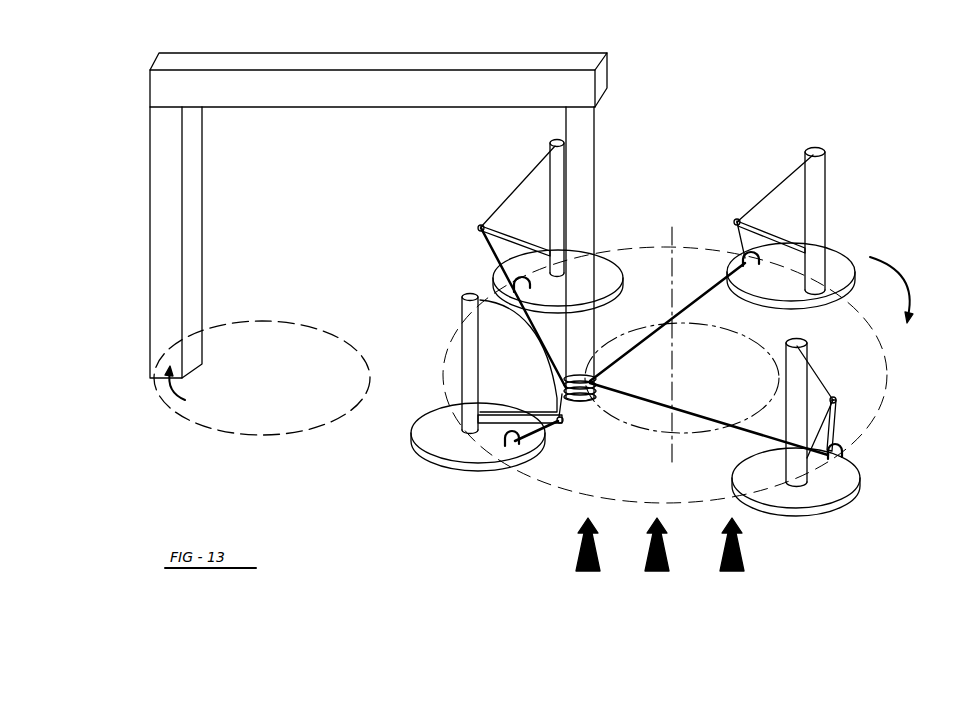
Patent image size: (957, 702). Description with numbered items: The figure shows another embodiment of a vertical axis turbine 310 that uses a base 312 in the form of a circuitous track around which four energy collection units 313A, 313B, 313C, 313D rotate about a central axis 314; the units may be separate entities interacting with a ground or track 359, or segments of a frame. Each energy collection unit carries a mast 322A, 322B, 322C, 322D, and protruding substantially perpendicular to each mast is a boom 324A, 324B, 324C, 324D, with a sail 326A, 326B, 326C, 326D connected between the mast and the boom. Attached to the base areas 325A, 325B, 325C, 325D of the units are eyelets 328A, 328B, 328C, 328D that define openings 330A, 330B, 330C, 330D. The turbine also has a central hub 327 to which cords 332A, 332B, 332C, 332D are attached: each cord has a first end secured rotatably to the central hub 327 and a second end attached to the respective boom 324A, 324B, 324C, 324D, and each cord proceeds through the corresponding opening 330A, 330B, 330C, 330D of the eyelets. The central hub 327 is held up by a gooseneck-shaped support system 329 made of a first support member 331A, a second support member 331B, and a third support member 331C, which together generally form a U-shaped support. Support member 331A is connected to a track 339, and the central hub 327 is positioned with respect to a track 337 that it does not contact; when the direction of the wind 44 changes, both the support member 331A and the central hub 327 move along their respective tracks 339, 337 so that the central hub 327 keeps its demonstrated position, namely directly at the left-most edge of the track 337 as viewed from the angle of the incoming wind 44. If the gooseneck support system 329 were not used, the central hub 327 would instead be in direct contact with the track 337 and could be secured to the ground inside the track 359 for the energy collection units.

The vertical axis turbine 310 is at (828, 62).
The support system 329 is at (529, 52).
The first support member 331A is at (165, 183).
The second support member 331B is at (377, 85).
The third support member 331C is at (586, 140).
The track 339 is at (193, 418).
The base 312 is at (889, 384).
The track 359 is at (889, 362).
The track 337 is at (733, 334).
The central axis 314 is at (672, 241).
The central hub 327 is at (583, 383).
The mast 322A is at (552, 143).
The energy collection unit 313A is at (598, 246).
The base area 325A is at (601, 252).
The sail 326A is at (527, 190).
The boom 324A is at (481, 227).
The eyelet 328A is at (516, 291).
The opening 330A is at (512, 283).
The cord 332A is at (608, 342).
The mast 322B is at (817, 151).
The energy collection unit 313B is at (839, 238).
The base area 325B is at (841, 254).
The sail 326B is at (790, 196).
The boom 324B is at (737, 221).
The eyelet 328B is at (745, 256).
The opening 330B is at (746, 262).
The cord 332B is at (733, 305).
The mast 322C is at (799, 344).
The energy collection unit 313C is at (764, 517).
The base area 325C is at (851, 478).
The sail 326C is at (812, 392).
The boom 324C is at (836, 401).
The eyelet 328C is at (846, 460).
The opening 330C is at (843, 453).
The cord 332C is at (735, 439).
The mast 322D is at (466, 300).
The energy collection unit 313D is at (450, 478).
The base area 325D is at (425, 430).
The sail 326D is at (497, 353).
The boom 324D is at (495, 420).
The eyelet 328D is at (525, 440).
The opening 330D is at (518, 446).
The cord 332D is at (567, 396).
The wind 44 is at (752, 580).